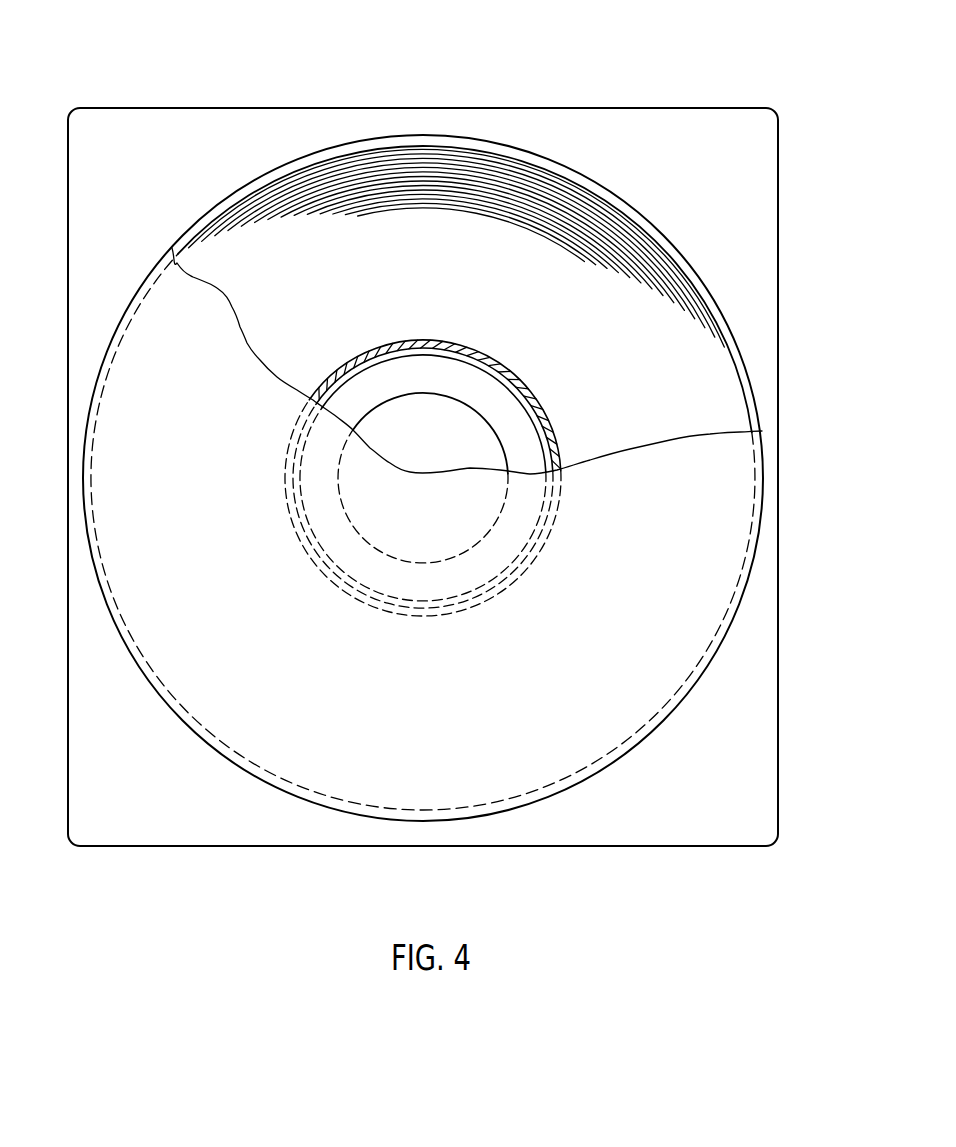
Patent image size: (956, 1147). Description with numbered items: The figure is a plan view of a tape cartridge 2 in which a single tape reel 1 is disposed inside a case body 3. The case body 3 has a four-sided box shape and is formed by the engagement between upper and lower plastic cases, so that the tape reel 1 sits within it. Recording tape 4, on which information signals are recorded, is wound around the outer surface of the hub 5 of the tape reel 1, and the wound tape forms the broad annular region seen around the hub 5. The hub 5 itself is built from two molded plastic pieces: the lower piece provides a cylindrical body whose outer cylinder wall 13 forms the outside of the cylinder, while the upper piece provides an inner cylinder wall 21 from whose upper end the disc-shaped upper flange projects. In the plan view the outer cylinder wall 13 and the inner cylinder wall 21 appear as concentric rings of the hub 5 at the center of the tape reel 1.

The tape reel 1 is at (442, 130).
The tape cartridge 2 is at (731, 97).
The case body 3 is at (779, 217).
The recording tape 4 is at (603, 193).
The hub 5 is at (574, 302).
The outer cylinder wall 13 is at (485, 350).
The inner cylinder wall 21 is at (513, 374).